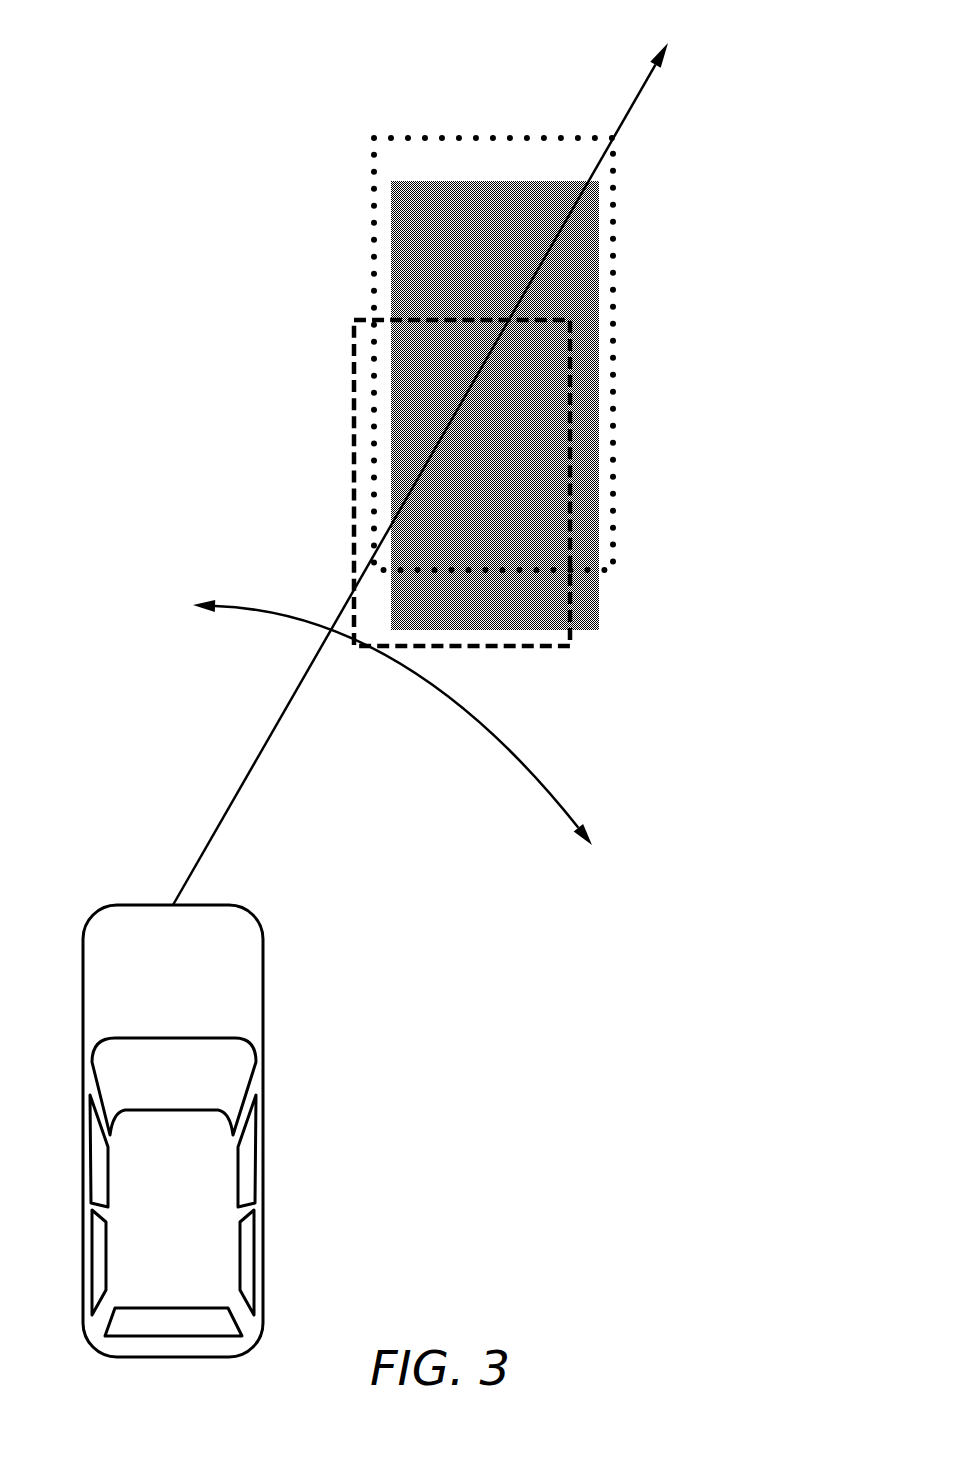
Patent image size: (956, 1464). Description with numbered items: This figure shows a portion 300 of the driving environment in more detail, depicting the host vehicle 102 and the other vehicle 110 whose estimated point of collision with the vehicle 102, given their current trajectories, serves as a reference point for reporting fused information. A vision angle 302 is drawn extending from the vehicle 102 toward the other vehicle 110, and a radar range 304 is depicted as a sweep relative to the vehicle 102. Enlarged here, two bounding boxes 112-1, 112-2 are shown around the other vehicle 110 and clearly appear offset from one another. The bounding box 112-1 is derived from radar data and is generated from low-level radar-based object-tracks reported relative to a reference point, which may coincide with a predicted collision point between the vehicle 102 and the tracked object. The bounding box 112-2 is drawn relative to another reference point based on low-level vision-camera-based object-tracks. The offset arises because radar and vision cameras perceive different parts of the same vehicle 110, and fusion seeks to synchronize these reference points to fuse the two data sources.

The portion 300 is at (96, 46).
The other vehicle 110 is at (391, 302).
The bounding box 112-1 is at (352, 423).
The bounding box 112-2 is at (613, 356).
The vision angle 302 is at (230, 807).
The radar range 304 is at (288, 620).
The vehicle 102 is at (263, 1130).